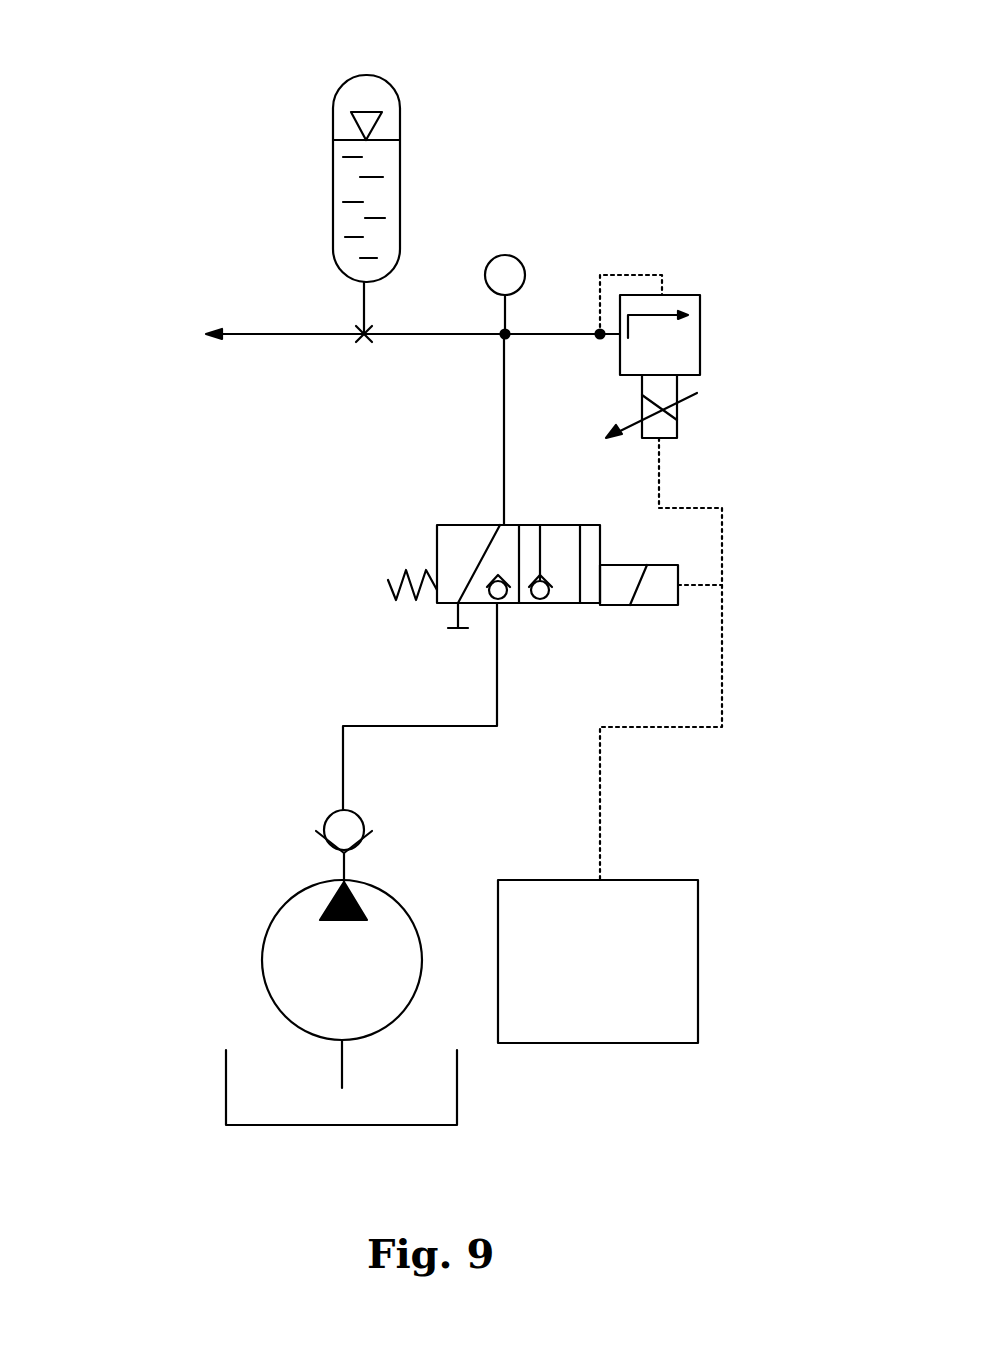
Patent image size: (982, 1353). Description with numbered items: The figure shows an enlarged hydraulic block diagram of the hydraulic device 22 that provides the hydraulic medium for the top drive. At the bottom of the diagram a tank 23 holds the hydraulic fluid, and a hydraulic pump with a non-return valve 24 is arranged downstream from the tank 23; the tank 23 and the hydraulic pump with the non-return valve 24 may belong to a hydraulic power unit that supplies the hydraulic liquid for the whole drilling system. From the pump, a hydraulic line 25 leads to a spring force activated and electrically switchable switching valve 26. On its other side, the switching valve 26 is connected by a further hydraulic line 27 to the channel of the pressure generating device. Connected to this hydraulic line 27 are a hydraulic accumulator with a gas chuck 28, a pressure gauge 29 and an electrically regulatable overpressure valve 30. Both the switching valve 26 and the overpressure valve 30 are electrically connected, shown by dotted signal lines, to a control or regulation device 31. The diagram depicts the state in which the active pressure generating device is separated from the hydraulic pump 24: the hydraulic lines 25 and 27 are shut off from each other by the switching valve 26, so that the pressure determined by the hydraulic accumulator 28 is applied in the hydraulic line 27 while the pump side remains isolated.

The hydraulic device 22 is at (102, 97).
The tank 23 is at (243, 1098).
The hydraulic pump with non-return valve 24 is at (203, 893).
The hydraulic line 25 is at (445, 726).
The switching valve 26 is at (453, 547).
The hydraulic line 27 is at (437, 336).
The hydraulic accumulator with gas chuck 28 is at (382, 187).
The pressure gauge 29 is at (523, 260).
The overpressure valve 30 is at (688, 300).
The control or regulation device 31 is at (665, 947).